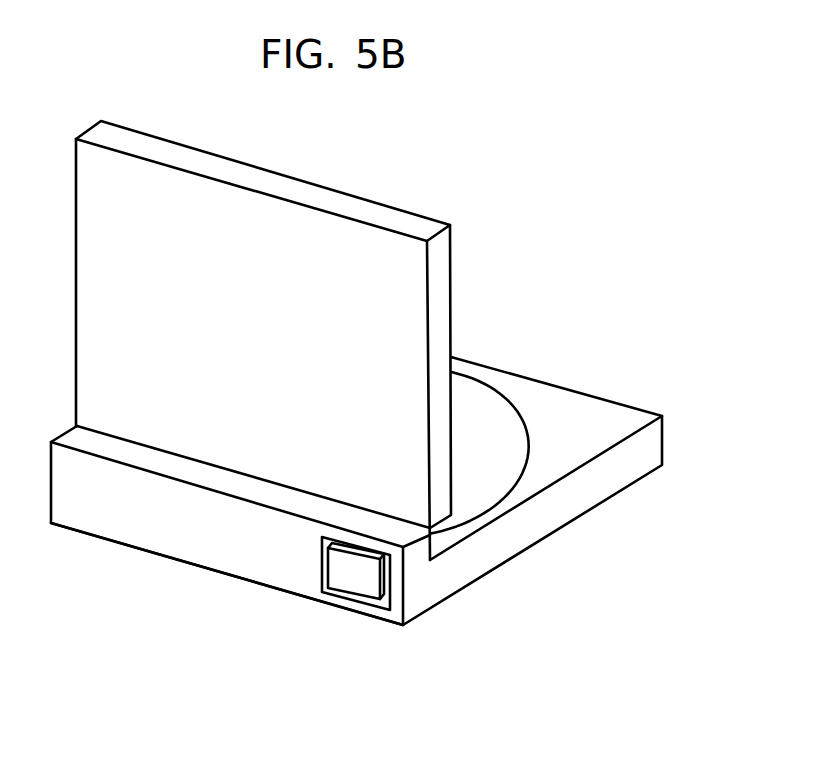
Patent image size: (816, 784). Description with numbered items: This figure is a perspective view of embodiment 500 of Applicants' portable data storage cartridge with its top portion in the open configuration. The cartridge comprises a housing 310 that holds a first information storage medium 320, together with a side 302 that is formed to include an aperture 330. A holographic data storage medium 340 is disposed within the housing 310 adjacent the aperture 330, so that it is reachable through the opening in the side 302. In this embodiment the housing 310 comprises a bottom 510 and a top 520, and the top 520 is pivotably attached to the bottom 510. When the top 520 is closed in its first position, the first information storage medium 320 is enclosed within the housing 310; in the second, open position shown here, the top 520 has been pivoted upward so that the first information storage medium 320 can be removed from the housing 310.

The portable data storage cartridge embodiment 500 is at (552, 650).
The side 302 is at (207, 536).
The housing 310 is at (220, 573).
The first information storage medium 320 is at (515, 417).
The aperture 330 is at (383, 606).
The holographic data storage medium 340 is at (372, 586).
The bottom 510 is at (595, 507).
The top 520 is at (262, 348).